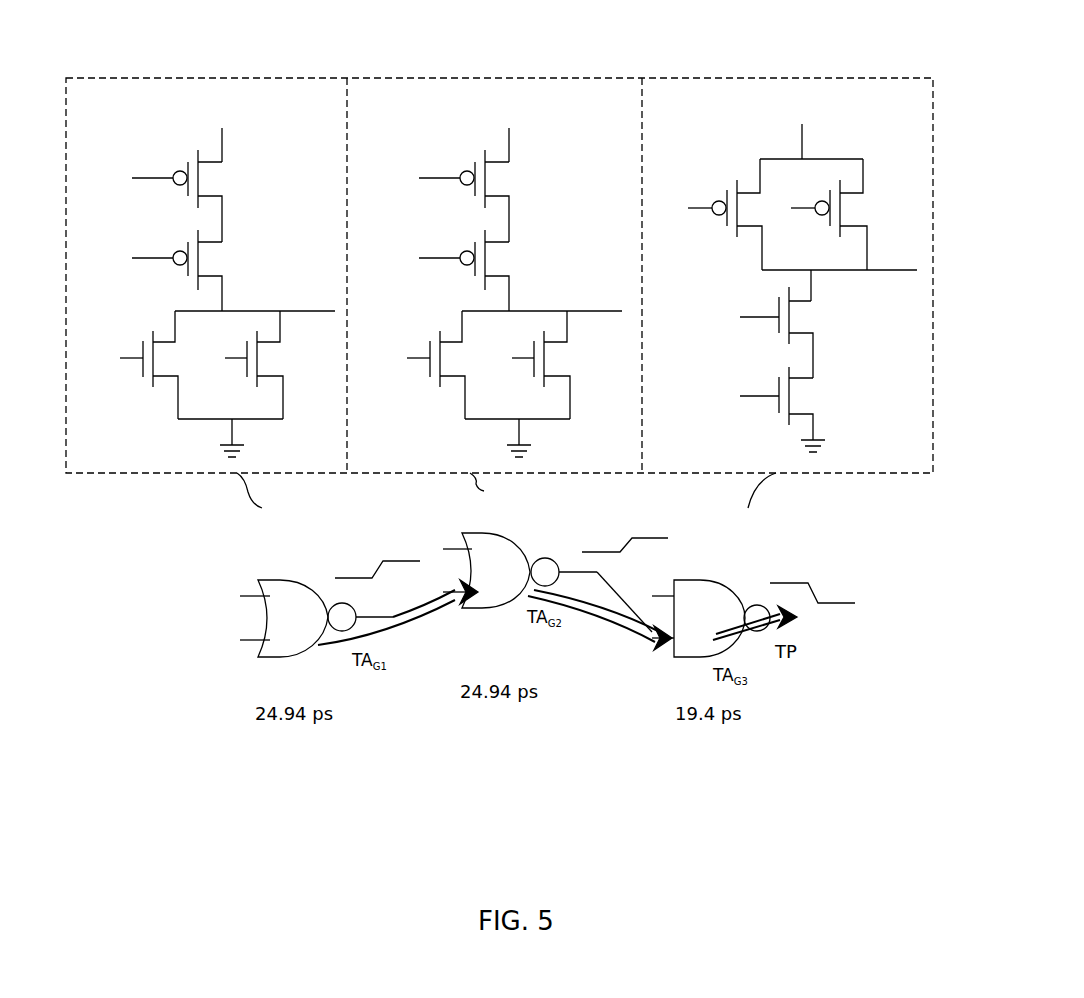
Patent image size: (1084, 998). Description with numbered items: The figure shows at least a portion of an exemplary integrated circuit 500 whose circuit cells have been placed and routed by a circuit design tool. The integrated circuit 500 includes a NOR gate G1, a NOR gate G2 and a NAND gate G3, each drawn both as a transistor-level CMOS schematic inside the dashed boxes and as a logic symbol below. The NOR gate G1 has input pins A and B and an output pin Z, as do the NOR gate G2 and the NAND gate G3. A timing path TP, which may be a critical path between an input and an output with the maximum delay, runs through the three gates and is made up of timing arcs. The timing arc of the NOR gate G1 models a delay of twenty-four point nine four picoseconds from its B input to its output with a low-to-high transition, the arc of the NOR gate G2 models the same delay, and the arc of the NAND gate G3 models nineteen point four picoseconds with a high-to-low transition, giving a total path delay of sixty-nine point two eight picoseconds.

The integrated circuit 500 is at (752, 0).
The NOR gate G1 is at (310, 582).
The NOR gate G2 is at (518, 546).
The NAND gate G3 is at (703, 578).